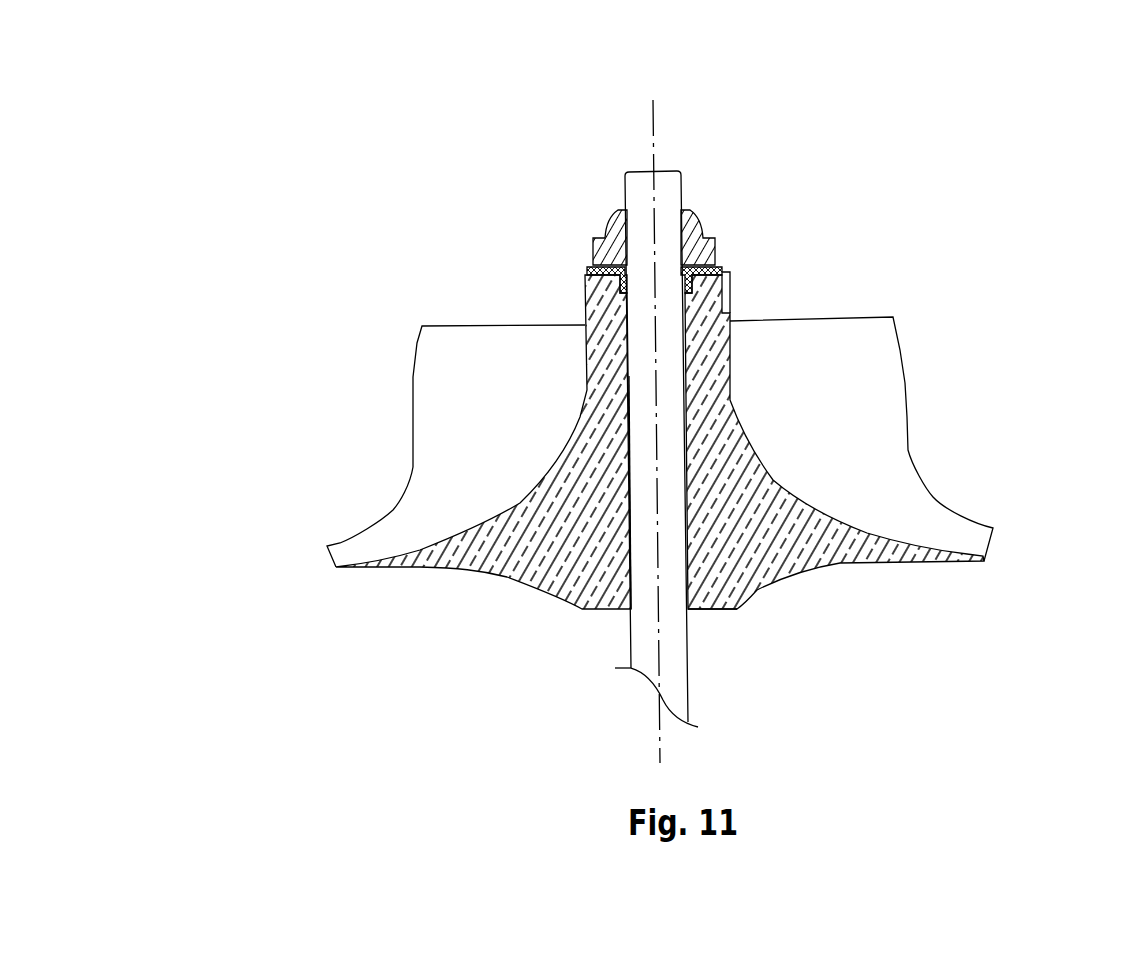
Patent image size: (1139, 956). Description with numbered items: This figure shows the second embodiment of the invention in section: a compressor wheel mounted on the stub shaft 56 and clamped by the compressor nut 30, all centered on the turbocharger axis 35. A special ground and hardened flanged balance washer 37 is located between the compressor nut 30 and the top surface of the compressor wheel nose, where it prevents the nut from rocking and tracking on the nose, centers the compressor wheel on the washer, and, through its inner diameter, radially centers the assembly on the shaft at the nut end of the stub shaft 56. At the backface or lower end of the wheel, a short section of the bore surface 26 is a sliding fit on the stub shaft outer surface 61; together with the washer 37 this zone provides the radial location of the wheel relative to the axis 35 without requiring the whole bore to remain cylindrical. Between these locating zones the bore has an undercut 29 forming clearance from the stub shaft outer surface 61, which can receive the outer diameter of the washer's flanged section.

The turbocharger axis 35 is at (660, 131).
The stub shaft 56 is at (673, 194).
The compressor nut 30 is at (593, 241).
The flanged balance washer 37 is at (724, 268).
The undercut 29 is at (697, 402).
The stub shaft outer surface 61 is at (632, 376).
The bore surface 26 is at (692, 610).